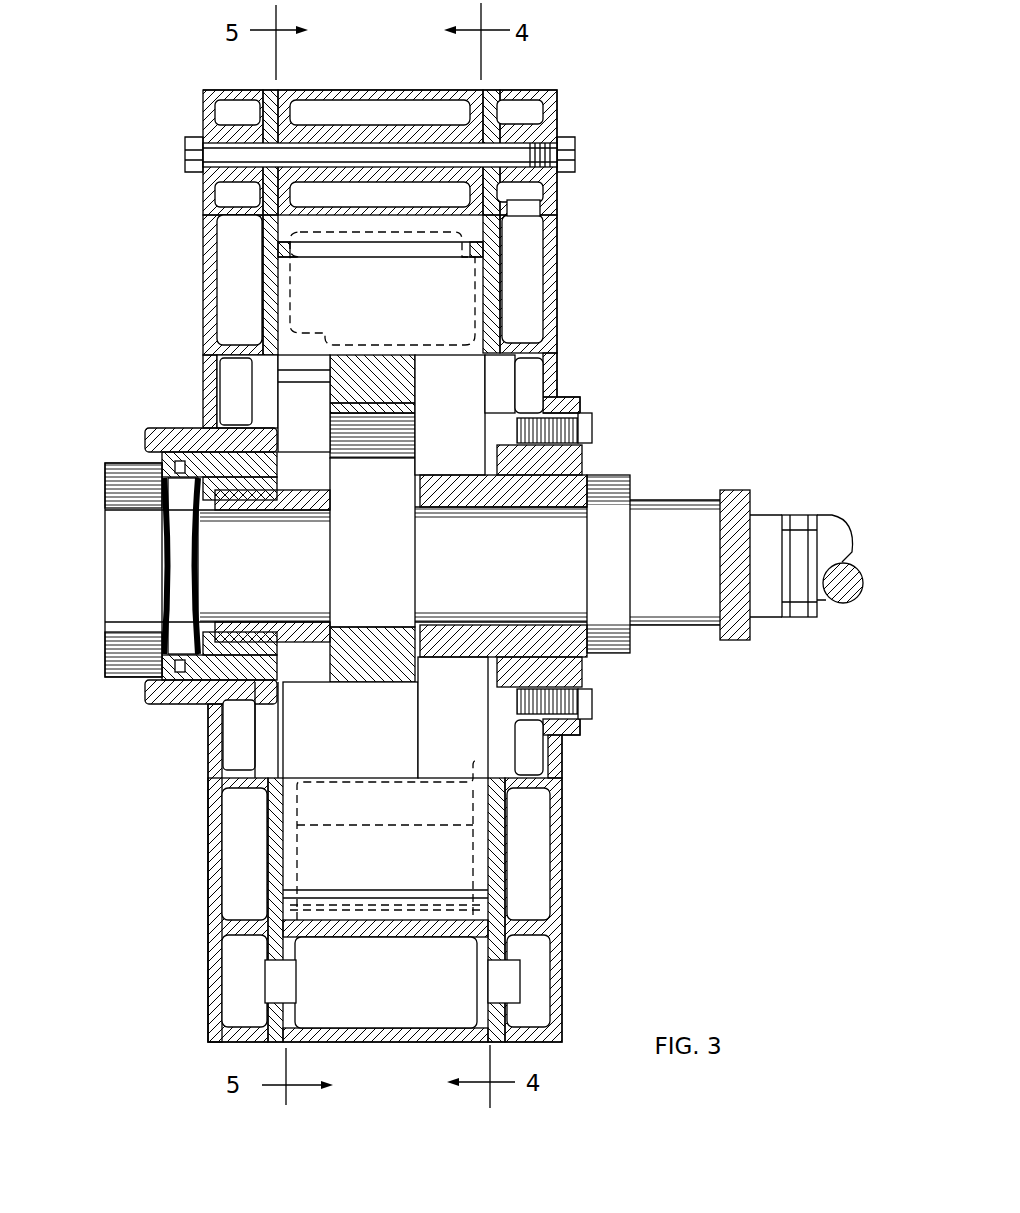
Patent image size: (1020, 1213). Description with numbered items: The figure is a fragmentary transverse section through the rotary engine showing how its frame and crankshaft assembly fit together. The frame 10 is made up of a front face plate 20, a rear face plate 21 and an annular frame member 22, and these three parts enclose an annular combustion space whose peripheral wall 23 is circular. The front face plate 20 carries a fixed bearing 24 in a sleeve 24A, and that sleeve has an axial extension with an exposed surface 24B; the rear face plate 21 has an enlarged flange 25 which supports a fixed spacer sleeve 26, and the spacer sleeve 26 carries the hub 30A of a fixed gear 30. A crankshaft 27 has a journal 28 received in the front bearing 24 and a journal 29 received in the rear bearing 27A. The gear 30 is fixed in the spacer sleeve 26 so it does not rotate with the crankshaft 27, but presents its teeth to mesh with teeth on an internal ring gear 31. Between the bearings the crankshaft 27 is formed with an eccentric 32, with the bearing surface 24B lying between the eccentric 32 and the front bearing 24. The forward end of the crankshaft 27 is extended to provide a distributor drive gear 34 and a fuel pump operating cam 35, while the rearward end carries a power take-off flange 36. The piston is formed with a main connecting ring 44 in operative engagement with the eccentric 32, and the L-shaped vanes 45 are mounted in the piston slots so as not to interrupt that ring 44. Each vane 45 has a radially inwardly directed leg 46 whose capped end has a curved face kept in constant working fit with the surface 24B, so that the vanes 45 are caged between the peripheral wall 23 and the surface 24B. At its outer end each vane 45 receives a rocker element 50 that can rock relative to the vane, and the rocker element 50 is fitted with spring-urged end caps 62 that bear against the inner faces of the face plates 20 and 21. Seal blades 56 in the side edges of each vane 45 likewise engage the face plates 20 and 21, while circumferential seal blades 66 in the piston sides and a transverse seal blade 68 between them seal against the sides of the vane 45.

The frame 10 is at (568, 258).
The front face plate 20 is at (556, 330).
The rear face plate 21 is at (203, 308).
The annular frame member 22 is at (330, 90).
The peripheral wall 23 is at (545, 212).
The fixed bearing 24 is at (566, 505).
The sleeve 24A is at (565, 472).
The axial extension with exposed surface 24B is at (455, 672).
The enlarged flange 25 is at (185, 695).
The fixed spacer sleeve 26 is at (228, 708).
The crankshaft 27 is at (182, 605).
The rear bearing 27A is at (235, 505).
The journal 28 is at (504, 566).
The journal 29 is at (286, 568).
The fixed gear 30 is at (302, 500).
The hub 30A is at (247, 625).
The internal ring gear 31 is at (290, 365).
The eccentric 32 is at (350, 548).
The distributor drive gear 34 is at (733, 490).
The fuel pump operating cam 35 is at (796, 535).
The power take-off flange 36 is at (108, 505).
The main connecting ring 44 is at (388, 385).
The vane 45 is at (435, 864).
The radially inwardly directed leg 46 is at (452, 385).
The rocker element 50 is at (405, 920).
The seal element 56 is at (480, 805).
The end cap 62 is at (483, 906).
The seal blade 66 is at (478, 262).
The transverse seal blade 68 is at (395, 255).